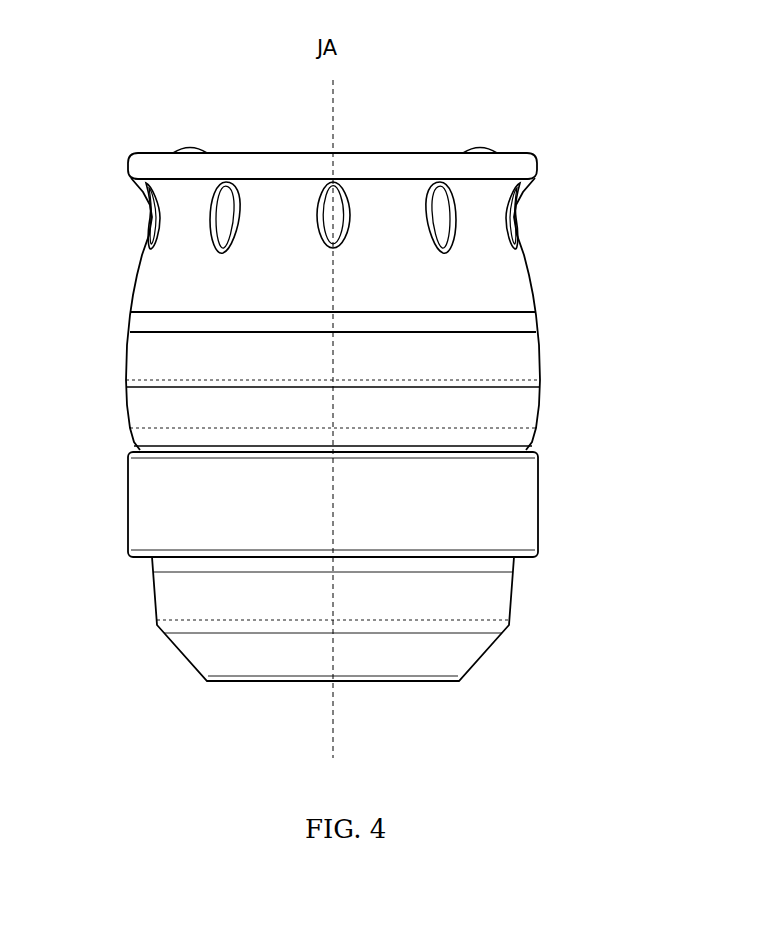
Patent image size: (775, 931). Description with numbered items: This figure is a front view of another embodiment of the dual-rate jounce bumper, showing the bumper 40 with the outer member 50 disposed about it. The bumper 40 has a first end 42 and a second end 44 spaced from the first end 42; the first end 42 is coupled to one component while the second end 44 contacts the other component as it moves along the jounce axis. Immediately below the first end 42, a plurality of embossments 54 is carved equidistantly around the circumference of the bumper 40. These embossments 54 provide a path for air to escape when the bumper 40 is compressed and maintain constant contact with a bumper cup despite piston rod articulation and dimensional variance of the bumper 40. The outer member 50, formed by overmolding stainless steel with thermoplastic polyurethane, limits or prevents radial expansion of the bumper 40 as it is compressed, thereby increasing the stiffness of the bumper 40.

The bumper 40 is at (541, 362).
The first end 42 is at (546, 163).
The second end 44 is at (493, 657).
The outer member 50 is at (538, 507).
The plurality of embossments 54 is at (348, 238).